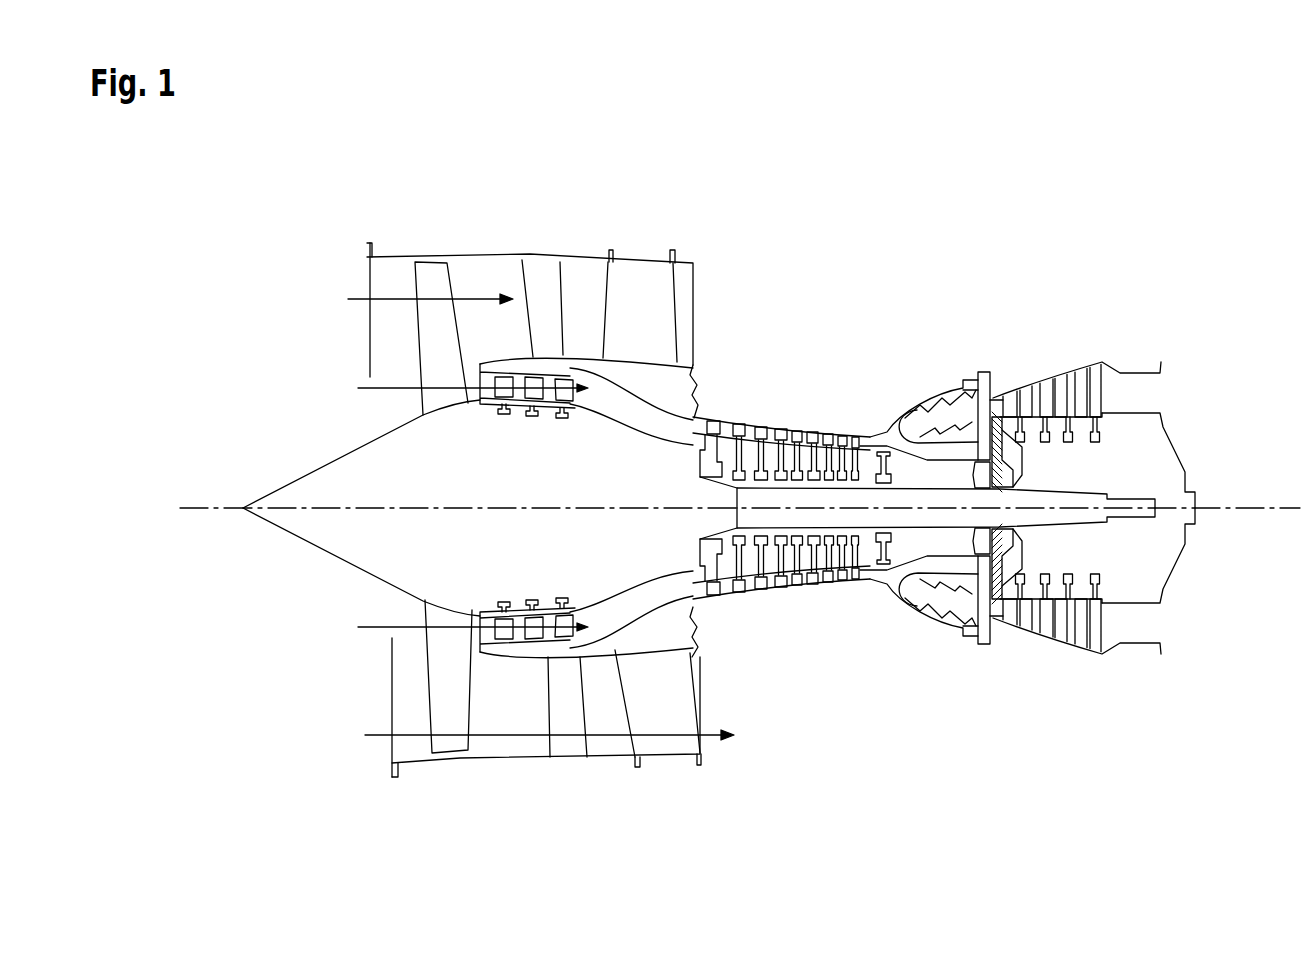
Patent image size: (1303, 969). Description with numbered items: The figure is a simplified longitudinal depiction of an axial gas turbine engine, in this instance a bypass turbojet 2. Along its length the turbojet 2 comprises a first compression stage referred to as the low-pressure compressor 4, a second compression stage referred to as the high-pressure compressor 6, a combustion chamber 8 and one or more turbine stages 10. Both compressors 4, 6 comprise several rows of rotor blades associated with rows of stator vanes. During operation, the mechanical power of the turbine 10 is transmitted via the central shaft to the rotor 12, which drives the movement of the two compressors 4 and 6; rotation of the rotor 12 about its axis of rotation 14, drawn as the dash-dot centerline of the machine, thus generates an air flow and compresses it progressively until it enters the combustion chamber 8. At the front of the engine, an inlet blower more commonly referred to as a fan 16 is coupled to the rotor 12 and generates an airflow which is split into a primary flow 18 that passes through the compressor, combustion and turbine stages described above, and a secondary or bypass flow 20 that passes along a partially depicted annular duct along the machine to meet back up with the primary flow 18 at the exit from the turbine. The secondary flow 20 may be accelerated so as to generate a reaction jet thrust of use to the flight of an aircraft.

The turbojet 2 is at (919, 289).
The low-pressure compressor 4 is at (503, 408).
The high-pressure compressor 6 is at (748, 432).
The combustion chamber 8 is at (908, 432).
The turbine stages 10 is at (1076, 372).
The rotor 12 is at (320, 553).
The axis of rotation 14 is at (533, 510).
The fan 16 is at (437, 331).
The primary flow 18 is at (510, 508).
The secondary flow 20 is at (524, 516).